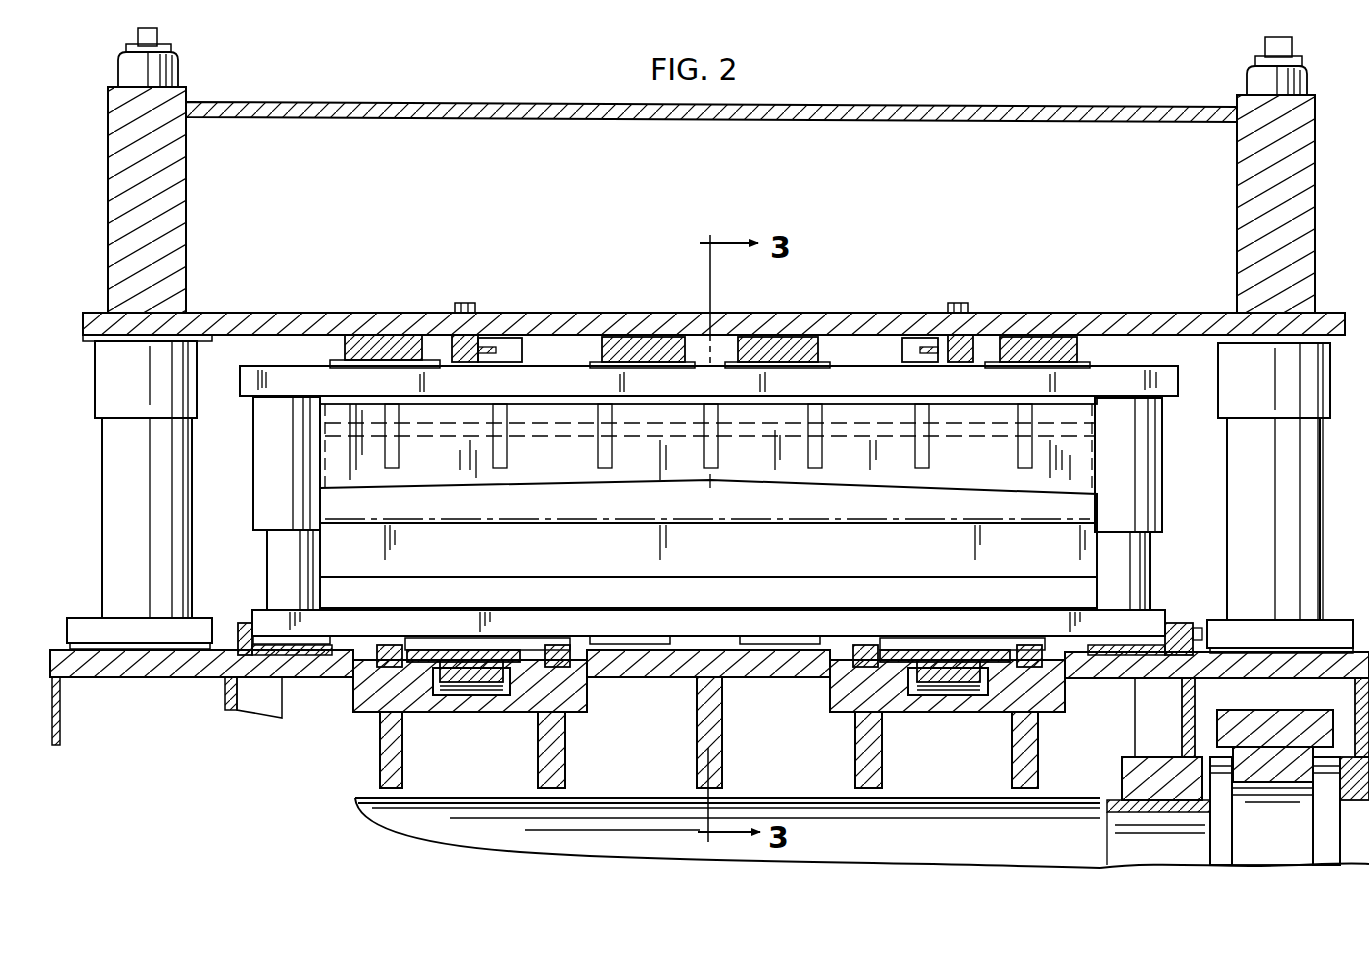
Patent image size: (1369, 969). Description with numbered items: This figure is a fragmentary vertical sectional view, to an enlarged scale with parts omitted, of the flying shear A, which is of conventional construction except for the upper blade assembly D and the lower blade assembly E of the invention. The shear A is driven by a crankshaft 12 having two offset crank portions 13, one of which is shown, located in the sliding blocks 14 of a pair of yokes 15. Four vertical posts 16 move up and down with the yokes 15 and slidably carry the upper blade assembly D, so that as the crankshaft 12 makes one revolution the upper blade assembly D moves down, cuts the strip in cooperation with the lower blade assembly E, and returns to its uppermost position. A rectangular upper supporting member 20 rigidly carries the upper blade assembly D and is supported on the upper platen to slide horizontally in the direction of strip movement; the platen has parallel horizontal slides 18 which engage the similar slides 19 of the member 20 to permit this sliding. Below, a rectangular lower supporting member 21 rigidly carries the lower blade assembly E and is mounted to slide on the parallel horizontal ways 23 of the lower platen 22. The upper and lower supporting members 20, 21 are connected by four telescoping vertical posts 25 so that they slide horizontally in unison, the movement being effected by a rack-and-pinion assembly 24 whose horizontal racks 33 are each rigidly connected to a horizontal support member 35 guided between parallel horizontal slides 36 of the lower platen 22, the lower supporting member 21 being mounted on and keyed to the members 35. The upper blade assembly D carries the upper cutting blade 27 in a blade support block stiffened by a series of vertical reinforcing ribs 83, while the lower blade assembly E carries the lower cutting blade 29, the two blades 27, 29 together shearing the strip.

The flying shear A is at (1008, 74).
The crankshaft 12 is at (792, 806).
The crank portion 13 is at (1285, 842).
The sliding block 14 is at (1258, 755).
The yoke 15 is at (1242, 712).
The vertical post 16 is at (102, 508).
The horizontal slide 18 is at (455, 340).
The slide 19 is at (512, 354).
The upper supporting member 20 is at (735, 388).
The lower supporting member 21 is at (428, 616).
The lower platen 22 is at (178, 666).
The horizontal way 23 is at (242, 630).
The rack-and-pinion assembly 24 is at (462, 698).
The telescoping vertical post 25 is at (280, 550).
The cutting blade 27 is at (725, 475).
The cutting blade 29 is at (812, 536).
The horizontal rack 33 is at (486, 690).
The horizontal support member 35 is at (470, 656).
The horizontal slide 36 is at (392, 646).
The vertical reinforcing rib 83 is at (508, 455).
The upper blade assembly D is at (247, 490).
The lower blade assembly E is at (1160, 586).